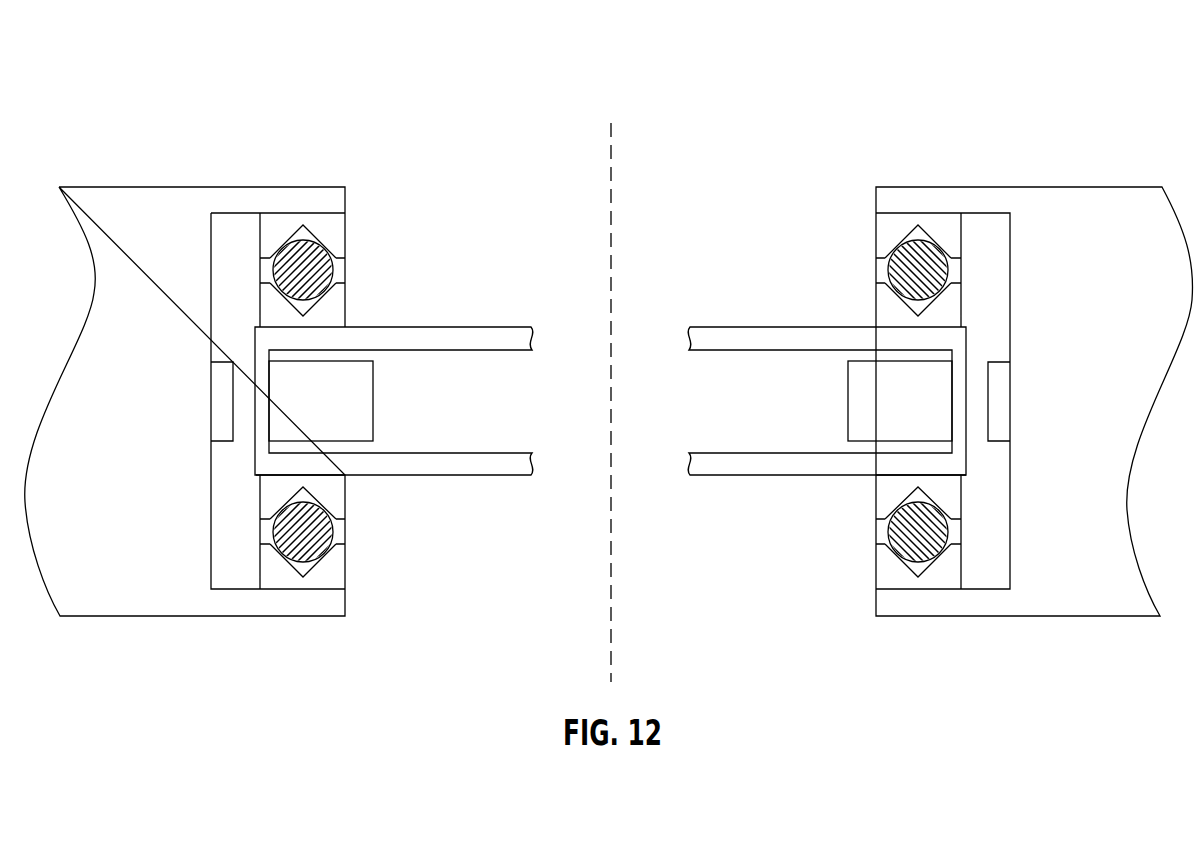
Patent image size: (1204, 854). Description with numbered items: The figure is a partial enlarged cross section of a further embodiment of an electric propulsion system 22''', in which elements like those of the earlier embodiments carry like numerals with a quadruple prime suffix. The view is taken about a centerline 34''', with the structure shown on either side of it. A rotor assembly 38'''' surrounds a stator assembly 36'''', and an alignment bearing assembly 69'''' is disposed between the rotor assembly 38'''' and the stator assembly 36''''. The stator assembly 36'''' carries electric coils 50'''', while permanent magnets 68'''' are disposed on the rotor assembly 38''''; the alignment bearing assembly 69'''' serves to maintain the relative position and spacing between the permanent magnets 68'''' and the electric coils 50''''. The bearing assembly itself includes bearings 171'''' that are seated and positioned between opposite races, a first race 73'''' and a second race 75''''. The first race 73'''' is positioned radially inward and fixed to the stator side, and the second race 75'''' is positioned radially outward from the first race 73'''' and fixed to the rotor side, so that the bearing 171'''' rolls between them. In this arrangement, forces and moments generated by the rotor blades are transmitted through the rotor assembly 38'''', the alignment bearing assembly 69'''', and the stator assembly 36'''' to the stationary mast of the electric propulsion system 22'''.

The electric propulsion system 22''' is at (940, 372).
The rotor assembly 38'''' is at (1034, 366).
The stator assembly 36'''' is at (827, 367).
The electric coils 50'''' is at (852, 401).
The permanent magnets 68'''' is at (1046, 401).
The first race 73'''' is at (871, 506).
The bearing 171'''' is at (891, 532).
The second race 75'''' is at (872, 579).
The alignment bearing assembly 69'''' is at (891, 454).
The centerline 34''' is at (566, 402).